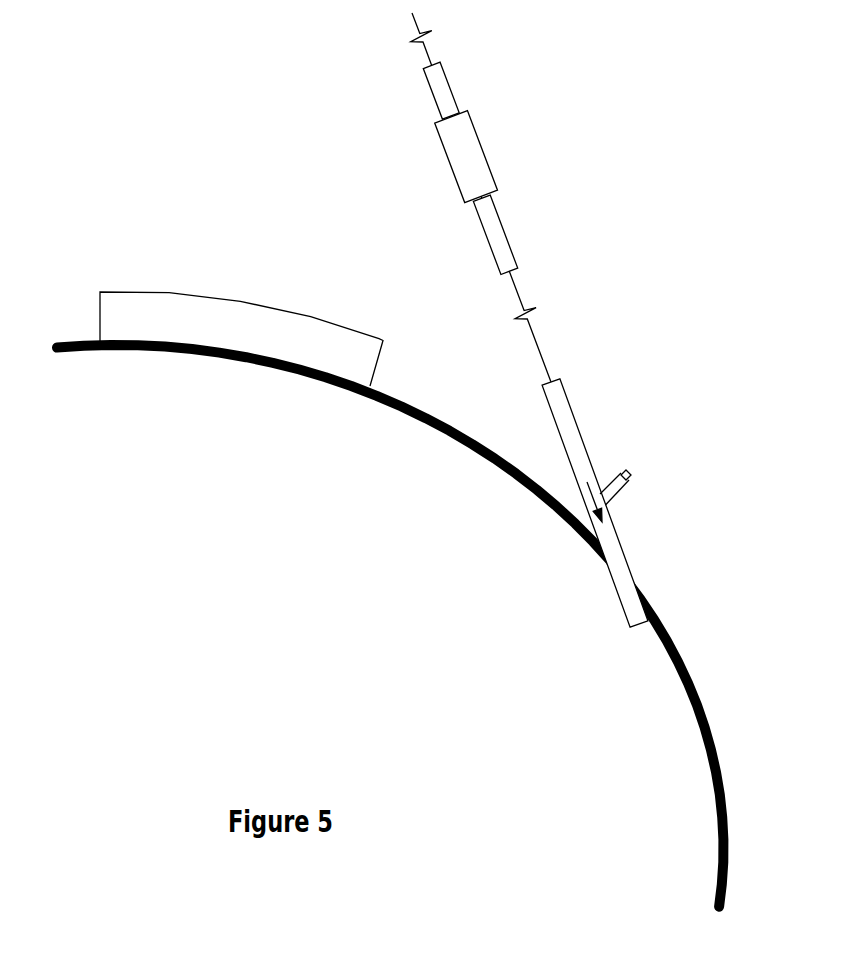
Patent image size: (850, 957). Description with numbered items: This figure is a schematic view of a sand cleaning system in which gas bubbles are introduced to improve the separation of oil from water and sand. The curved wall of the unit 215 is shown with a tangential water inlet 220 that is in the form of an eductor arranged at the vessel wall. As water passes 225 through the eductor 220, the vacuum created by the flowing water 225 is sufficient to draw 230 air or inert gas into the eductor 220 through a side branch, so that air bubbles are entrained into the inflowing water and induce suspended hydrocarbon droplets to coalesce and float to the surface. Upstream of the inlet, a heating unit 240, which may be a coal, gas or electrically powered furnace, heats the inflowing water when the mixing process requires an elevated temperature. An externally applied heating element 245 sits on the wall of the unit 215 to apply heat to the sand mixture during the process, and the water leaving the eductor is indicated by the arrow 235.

The unit 215 is at (731, 802).
The tangential water inlet 220 is at (601, 367).
The water passage 225 is at (548, 378).
The air/inert gas draw 230 is at (627, 473).
The needle 235 is at (635, 610).
The heating unit 240 is at (488, 126).
The heating element 245 is at (244, 284).